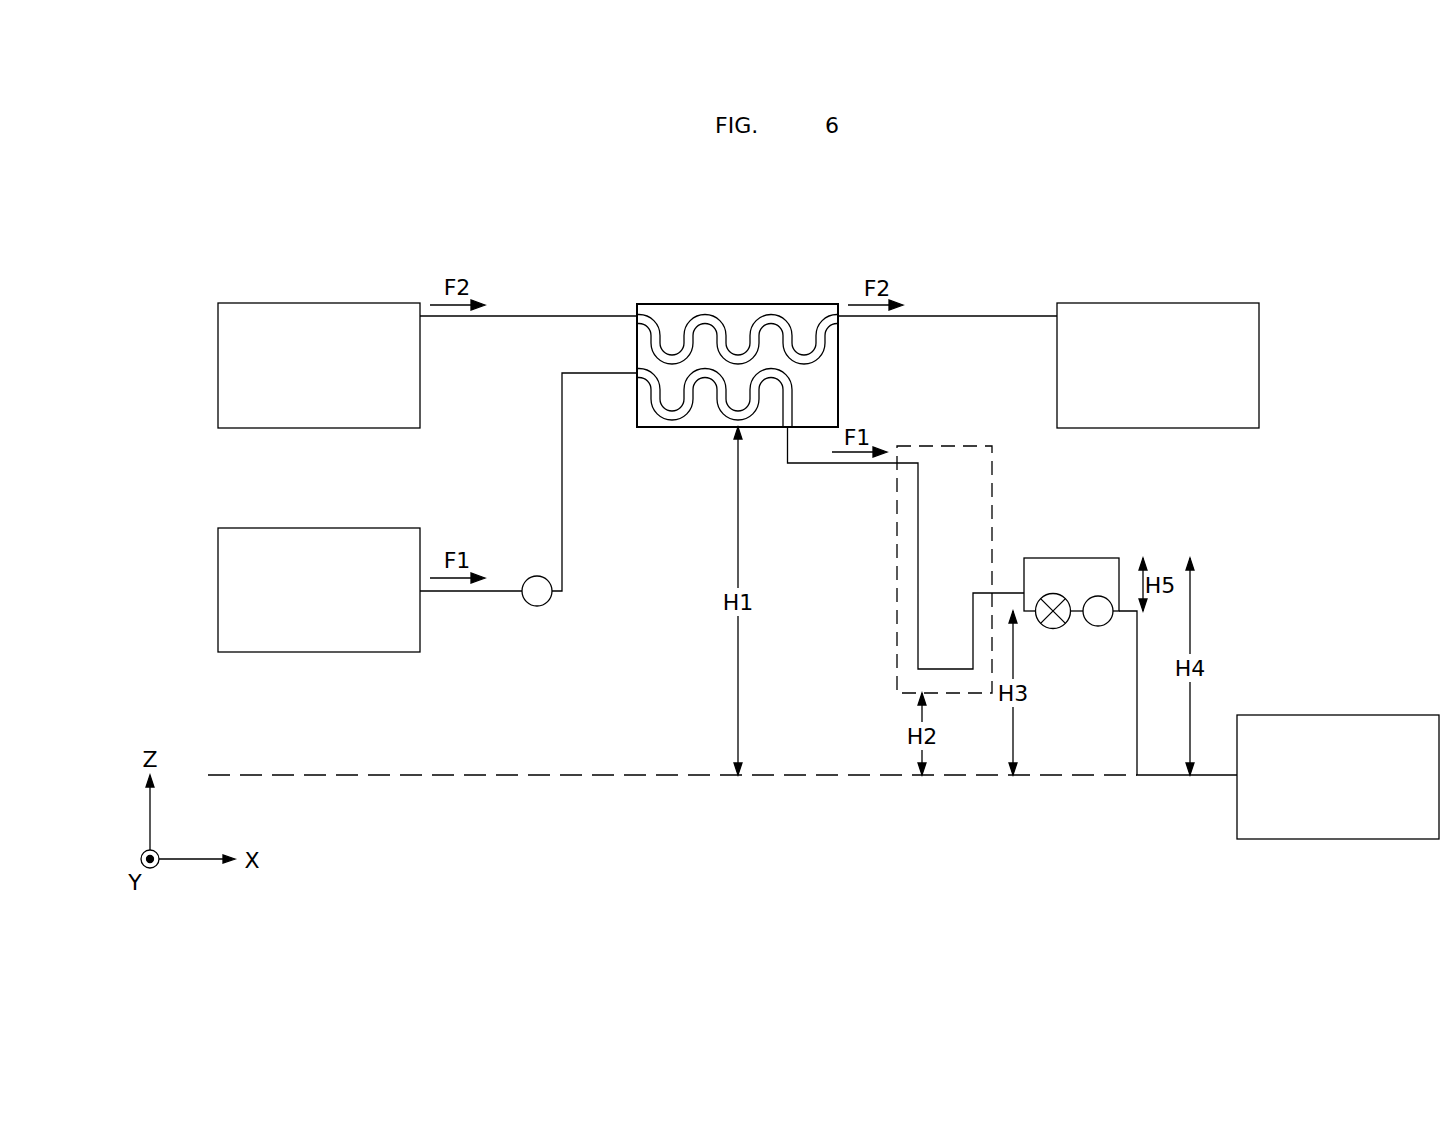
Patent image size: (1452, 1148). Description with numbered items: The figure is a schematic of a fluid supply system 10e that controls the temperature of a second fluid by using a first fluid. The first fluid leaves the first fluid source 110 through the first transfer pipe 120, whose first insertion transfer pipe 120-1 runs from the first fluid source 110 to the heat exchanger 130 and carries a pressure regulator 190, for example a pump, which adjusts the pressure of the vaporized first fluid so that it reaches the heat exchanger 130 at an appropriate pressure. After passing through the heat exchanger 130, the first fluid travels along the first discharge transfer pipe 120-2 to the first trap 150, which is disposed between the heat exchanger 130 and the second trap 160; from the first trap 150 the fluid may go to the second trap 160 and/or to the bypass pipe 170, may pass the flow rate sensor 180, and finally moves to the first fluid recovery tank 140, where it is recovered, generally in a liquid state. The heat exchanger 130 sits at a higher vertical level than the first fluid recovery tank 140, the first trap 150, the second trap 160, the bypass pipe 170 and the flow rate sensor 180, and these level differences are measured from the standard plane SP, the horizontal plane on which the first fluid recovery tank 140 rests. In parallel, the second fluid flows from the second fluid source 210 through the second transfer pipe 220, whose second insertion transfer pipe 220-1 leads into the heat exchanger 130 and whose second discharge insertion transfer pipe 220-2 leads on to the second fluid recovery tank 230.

The fluid supply system 10e is at (1432, 197).
The first fluid source 110 is at (320, 528).
The first transfer pipe 120 is at (722, 624).
The first insertion transfer pipe 120-1 is at (470, 595).
The first discharge transfer pipe 120-2 is at (857, 465).
The heat exchanger 130 is at (738, 304).
The first fluid recovery tank 140 is at (1338, 715).
The first trap 150 is at (945, 446).
The second trap 160 is at (1053, 629).
The bypass pipe 170 is at (1072, 558).
The flow rate sensor 180 is at (1098, 626).
The pressure regulator 190 is at (537, 606).
The second fluid source 210 is at (319, 303).
The second transfer pipe 220 is at (738, 500).
The second insertion transfer pipe 220-1 is at (528, 316).
The second discharge insertion transfer pipe 220-2 is at (948, 316).
The second fluid recovery tank 230 is at (1157, 303).
The standard plane SP is at (830, 780).